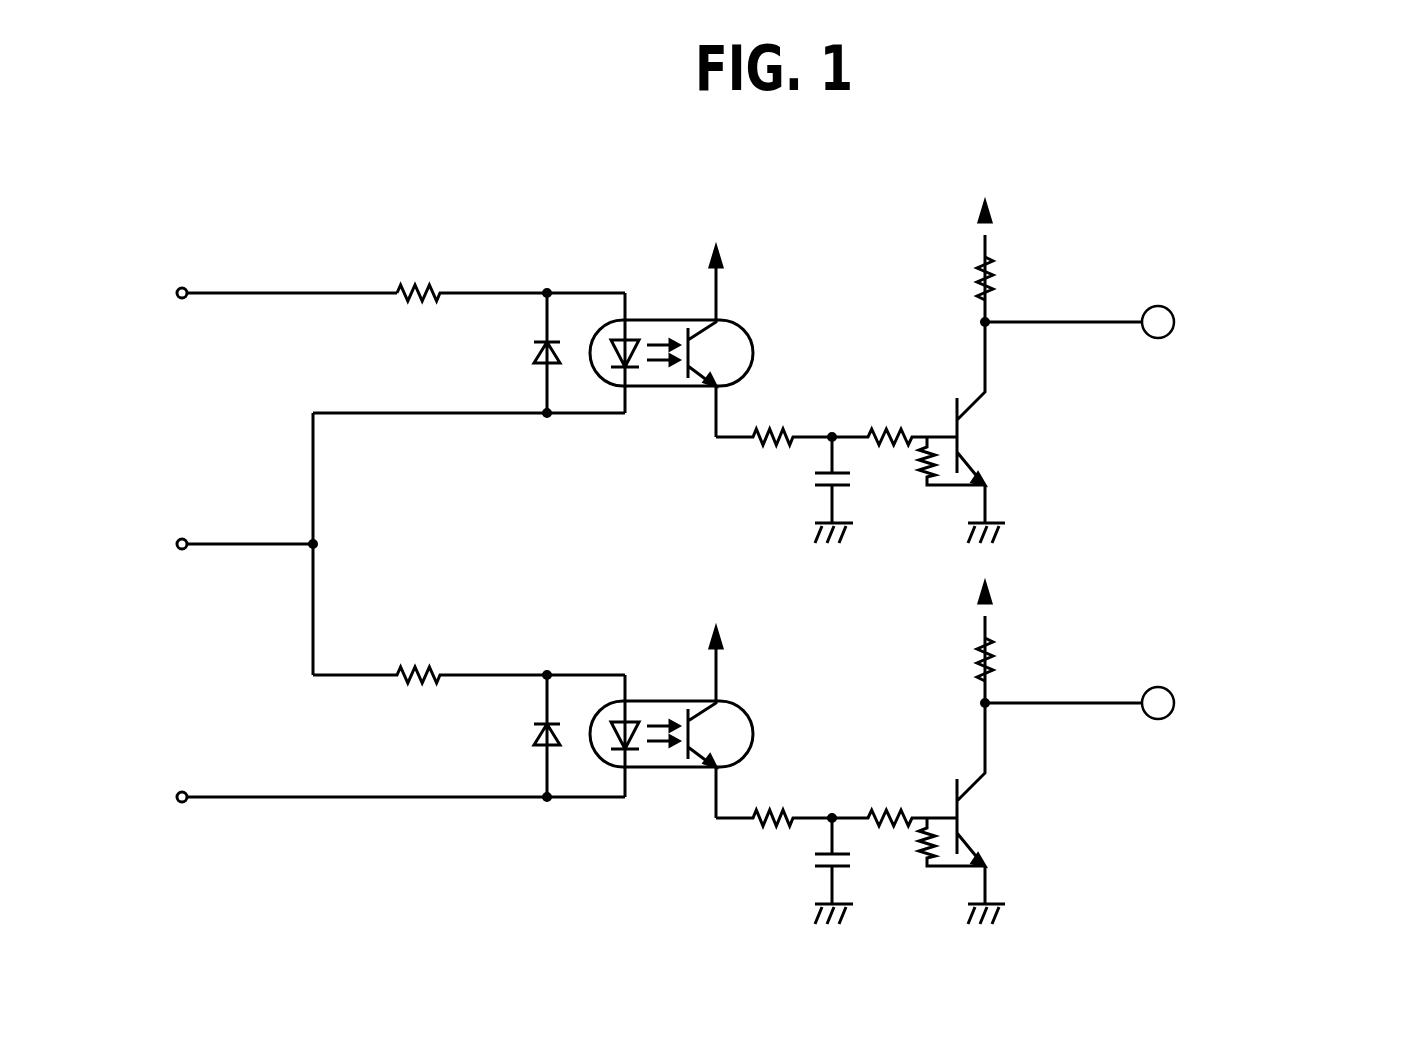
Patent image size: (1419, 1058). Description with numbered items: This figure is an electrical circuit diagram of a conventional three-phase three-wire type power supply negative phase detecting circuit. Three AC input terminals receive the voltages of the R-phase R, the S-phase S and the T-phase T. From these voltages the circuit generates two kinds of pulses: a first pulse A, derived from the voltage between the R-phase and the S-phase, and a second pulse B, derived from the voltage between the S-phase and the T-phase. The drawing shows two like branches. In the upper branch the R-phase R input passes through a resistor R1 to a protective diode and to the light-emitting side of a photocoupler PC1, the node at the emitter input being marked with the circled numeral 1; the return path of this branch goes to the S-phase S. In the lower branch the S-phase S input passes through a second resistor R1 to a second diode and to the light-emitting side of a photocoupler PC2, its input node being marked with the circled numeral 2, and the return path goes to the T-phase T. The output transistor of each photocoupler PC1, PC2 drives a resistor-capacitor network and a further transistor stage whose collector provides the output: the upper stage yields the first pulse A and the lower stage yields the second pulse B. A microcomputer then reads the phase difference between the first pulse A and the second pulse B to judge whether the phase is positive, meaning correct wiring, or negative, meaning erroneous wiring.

The R-phase R is at (274, 293).
The S-phase S is at (234, 544).
The T-phase T is at (388, 797).
The input resistor R1 is at (469, 470).
The first photocoupler light emitting diode node 1 is at (625, 334).
The second photocoupler light emitting diode node 2 is at (625, 717).
The first photocoupler PC1 is at (702, 342).
The second photocoupler PC2 is at (702, 723).
The first pulse A is at (1190, 317).
The second pulse B is at (1199, 698).